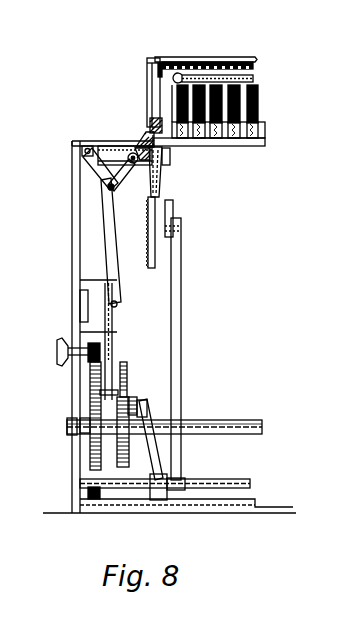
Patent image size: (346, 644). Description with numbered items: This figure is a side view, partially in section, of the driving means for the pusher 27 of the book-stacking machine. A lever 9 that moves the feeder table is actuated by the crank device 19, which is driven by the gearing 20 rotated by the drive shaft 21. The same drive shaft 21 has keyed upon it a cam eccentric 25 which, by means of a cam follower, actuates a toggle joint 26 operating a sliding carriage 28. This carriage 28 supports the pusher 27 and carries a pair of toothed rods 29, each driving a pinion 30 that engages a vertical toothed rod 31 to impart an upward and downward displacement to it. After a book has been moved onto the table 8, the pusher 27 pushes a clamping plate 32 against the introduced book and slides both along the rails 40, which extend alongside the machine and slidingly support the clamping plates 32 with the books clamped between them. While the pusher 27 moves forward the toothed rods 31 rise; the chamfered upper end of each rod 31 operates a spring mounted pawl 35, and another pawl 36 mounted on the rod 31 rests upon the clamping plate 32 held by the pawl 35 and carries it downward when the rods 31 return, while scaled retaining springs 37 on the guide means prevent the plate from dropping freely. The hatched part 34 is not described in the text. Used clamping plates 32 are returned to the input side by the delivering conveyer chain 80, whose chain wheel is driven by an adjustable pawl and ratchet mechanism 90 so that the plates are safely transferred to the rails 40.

The table 8 is at (78, 144).
The lever 9 is at (178, 317).
The crank device 19 is at (133, 397).
The gearing 20 is at (127, 367).
The drive shaft 21 is at (222, 421).
The cam eccentric 25 is at (93, 392).
The toggle joint 26 is at (112, 207).
The pusher 27 is at (137, 152).
The sliding carriage 28 is at (114, 152).
The toothed rod 29 is at (107, 184).
The pinion 30 is at (138, 164).
The toothed rod 31 is at (150, 243).
The clamping plate 32 is at (157, 57).
The wedge 34 is at (140, 133).
The spring mounted pawl 35 is at (147, 62).
The pawl 36 is at (158, 120).
The scaled retaining spring 37 is at (148, 82).
The rail 40 is at (263, 128).
The delivering conveyer chain 80 is at (255, 80).
The pawl and ratchet mechanism 90 is at (184, 68).